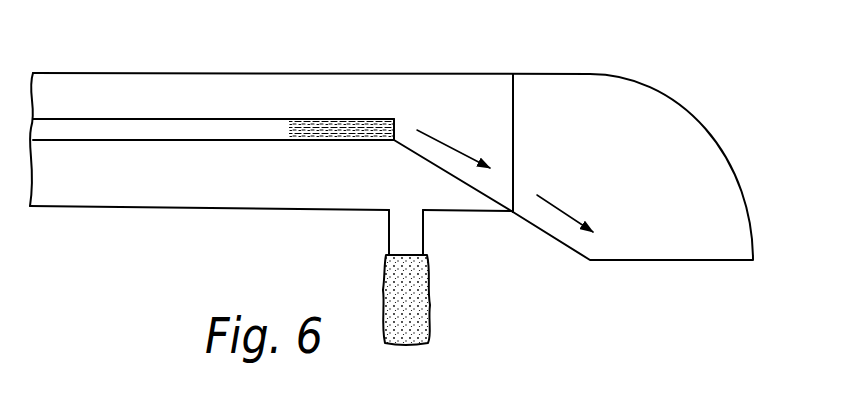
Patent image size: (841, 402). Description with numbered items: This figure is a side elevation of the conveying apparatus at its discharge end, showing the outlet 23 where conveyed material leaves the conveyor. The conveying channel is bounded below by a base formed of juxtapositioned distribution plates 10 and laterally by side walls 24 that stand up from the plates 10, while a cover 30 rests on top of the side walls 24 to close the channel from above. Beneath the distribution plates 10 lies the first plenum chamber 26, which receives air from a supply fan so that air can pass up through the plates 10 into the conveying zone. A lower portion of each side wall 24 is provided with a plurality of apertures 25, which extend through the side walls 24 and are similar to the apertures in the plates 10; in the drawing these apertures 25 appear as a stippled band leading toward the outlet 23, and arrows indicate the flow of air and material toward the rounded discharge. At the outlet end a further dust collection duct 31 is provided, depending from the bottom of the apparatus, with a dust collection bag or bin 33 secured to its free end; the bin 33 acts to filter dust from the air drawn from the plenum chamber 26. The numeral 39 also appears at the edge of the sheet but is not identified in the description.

The top wall of container 30 is at (110, 73).
The upper layer / wall 24 is at (235, 95).
The porous filler material 25 is at (353, 127).
The liquid passage 10 is at (258, 140).
The bottom wall 26 is at (158, 175).
The rounded end of container 23 is at (720, 150).
The outlet tube 31 is at (423, 237).
The absorbent sponge 33 is at (408, 305).
The reference numeral of adjacent figure 39 is at (830, 394).